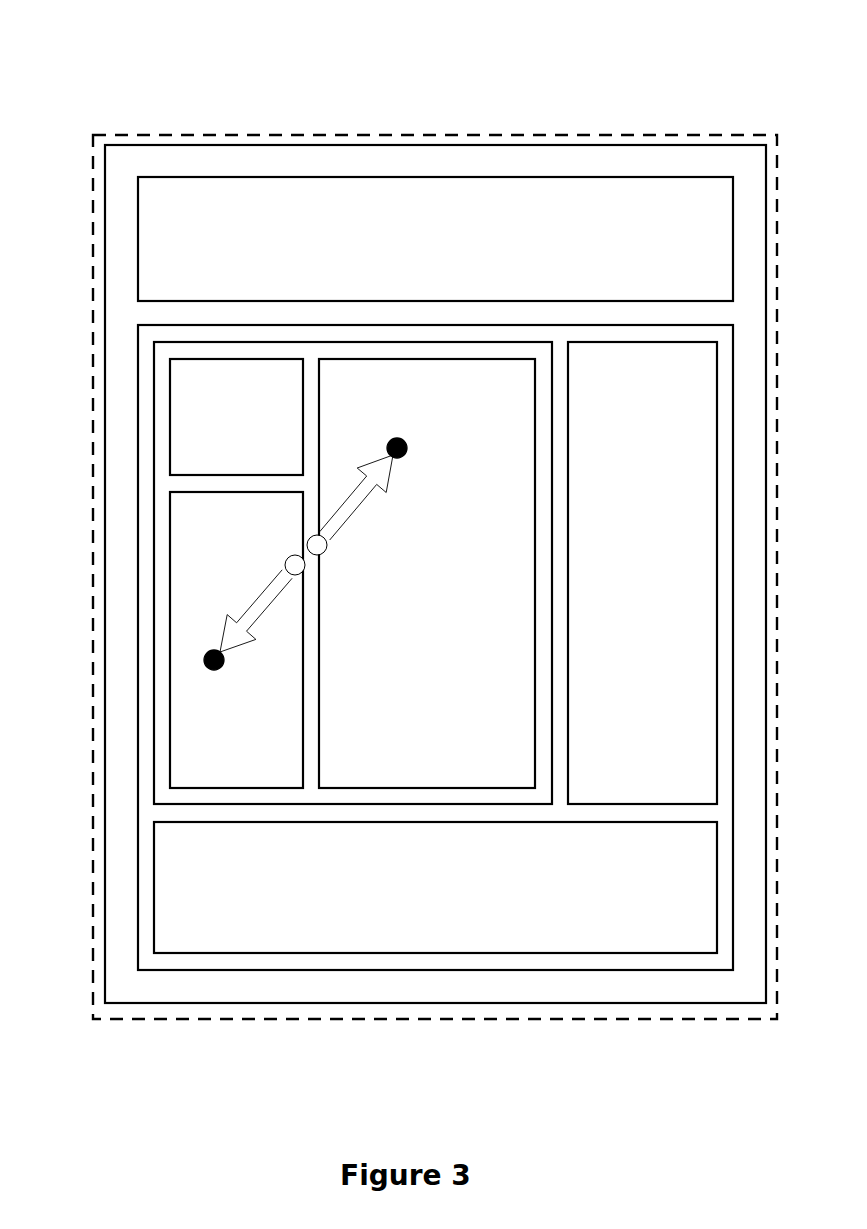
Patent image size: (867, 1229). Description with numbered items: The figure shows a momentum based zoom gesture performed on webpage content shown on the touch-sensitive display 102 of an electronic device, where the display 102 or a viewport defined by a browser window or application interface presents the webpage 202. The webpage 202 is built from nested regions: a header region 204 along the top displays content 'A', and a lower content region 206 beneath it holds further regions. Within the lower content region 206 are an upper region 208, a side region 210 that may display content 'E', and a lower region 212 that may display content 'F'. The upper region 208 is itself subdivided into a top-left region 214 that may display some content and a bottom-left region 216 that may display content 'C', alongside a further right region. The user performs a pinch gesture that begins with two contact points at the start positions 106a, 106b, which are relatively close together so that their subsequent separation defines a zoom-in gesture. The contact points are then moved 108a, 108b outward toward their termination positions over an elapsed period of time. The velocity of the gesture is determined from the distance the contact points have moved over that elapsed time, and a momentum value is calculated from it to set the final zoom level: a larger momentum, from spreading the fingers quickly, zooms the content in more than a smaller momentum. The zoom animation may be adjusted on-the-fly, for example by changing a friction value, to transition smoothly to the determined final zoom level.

The display 102 is at (758, 134).
The webpage 202 is at (557, 138).
The header region 204 is at (419, 284).
The lower content region 206 is at (137, 363).
The upper region 208 is at (154, 430).
The side region 210 is at (419, 930).
The lower region 212 is at (221, 456).
The top-left region 214 is at (218, 746).
The bottom-left region 216 is at (411, 616).
The start position of first contact point 106a is at (318, 534).
The start position of second contact point 106b is at (297, 575).
The movement of first contact point 108a is at (406, 449).
The movement of second contact point 108b is at (212, 671).